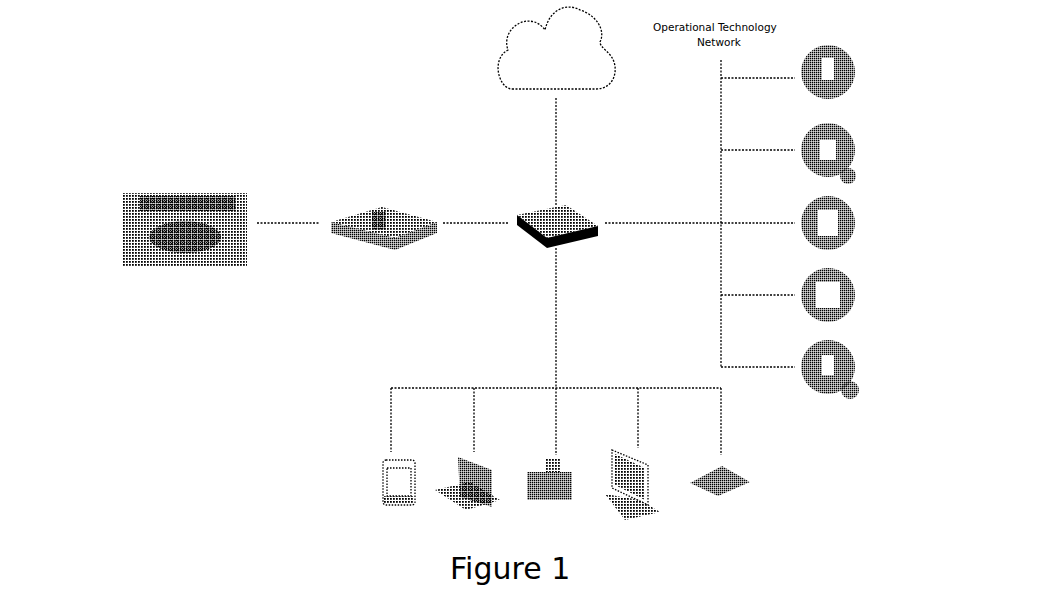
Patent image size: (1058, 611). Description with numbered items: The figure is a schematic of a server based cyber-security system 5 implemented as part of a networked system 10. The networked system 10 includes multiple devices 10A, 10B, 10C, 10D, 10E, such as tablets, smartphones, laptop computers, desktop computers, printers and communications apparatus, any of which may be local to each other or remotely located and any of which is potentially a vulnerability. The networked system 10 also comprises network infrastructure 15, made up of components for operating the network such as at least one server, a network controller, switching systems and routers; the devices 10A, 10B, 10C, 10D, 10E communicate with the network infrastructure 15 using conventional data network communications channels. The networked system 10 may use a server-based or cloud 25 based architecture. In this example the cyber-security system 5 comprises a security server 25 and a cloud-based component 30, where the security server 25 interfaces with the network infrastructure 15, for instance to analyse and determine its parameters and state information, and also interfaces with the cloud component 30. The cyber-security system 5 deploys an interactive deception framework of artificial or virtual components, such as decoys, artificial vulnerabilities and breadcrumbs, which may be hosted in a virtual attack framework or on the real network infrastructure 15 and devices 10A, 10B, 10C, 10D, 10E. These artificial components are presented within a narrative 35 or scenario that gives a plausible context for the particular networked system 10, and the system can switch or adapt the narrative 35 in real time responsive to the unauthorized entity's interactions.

The cyber-security system 5 is at (218, 148).
The networked system 10 is at (392, 356).
The device 10A is at (397, 472).
The device 10B is at (472, 490).
The device 10C is at (545, 490).
The device 10D is at (622, 487).
The device 10E is at (732, 490).
The network infrastructure 15 is at (530, 237).
The security server 25 is at (372, 235).
The cloud-based component 30 is at (158, 218).
The narrative 35 is at (847, 373).